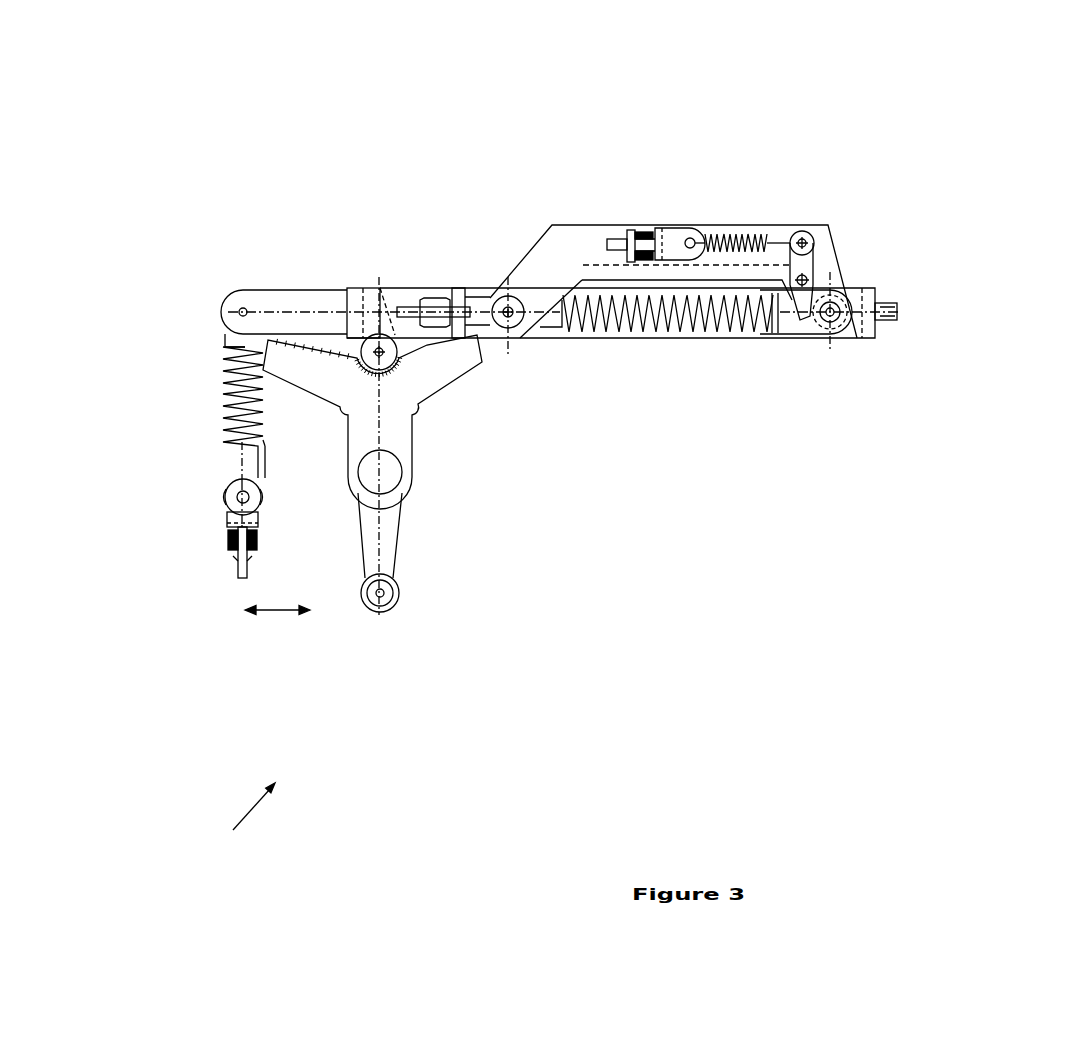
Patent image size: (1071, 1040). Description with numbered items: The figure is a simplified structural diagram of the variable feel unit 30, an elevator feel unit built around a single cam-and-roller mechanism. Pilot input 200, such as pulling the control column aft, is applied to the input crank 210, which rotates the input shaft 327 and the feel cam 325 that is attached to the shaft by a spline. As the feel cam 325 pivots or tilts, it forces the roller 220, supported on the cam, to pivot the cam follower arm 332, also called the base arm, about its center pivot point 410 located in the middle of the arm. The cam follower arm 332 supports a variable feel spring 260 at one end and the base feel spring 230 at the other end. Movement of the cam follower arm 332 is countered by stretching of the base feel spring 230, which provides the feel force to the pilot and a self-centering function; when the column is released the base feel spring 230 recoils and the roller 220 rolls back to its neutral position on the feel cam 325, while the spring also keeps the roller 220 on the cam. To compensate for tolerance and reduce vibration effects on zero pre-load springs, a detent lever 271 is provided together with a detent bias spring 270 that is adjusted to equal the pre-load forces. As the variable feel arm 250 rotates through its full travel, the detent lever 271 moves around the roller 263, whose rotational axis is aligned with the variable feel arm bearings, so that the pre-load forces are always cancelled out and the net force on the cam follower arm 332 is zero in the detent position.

The variable feel arm 250 is at (588, 293).
The variable feel spring 260 is at (555, 245).
The pivot point 410 is at (495, 288).
The cam follower arm 332 is at (355, 288).
The roller 220 is at (390, 352).
The feel cam 325 is at (398, 415).
The input shaft 327 is at (382, 478).
The input crank 210 is at (386, 606).
The roller 263 is at (830, 315).
The detent lever 271 is at (802, 231).
The detent bias spring 270 is at (718, 232).
The base feel spring 230 is at (232, 400).
The pilot input 200 is at (186, 555).
The variable feel unit 30 is at (230, 831).